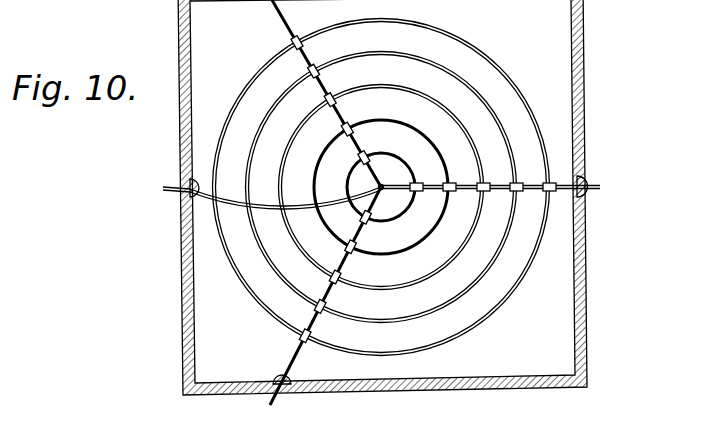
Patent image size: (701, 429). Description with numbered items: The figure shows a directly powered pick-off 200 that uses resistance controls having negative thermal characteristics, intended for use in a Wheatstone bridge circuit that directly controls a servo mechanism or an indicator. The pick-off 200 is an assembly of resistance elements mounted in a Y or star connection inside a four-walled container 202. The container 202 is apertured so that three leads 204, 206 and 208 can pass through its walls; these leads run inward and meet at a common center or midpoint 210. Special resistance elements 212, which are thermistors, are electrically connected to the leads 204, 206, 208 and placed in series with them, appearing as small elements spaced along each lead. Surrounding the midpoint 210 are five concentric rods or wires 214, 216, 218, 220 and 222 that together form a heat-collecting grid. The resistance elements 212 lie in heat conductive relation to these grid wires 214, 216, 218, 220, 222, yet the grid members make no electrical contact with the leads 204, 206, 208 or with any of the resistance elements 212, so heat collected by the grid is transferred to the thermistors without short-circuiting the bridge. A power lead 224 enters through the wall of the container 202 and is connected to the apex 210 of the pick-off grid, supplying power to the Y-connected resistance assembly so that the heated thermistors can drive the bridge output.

The pick-off 200 is at (546, 36).
The container 202 is at (585, 76).
The lead 204 is at (572, 187).
The lead 206 is at (288, 370).
The lead 208 is at (283, 24).
The center or midpoint 210 is at (384, 182).
The resistance elements 212 is at (312, 70).
The concentric rod or wire 214 is at (414, 179).
The concentric rod or wire 216 is at (444, 152).
The concentric rod or wire 218 is at (455, 116).
The concentric rod or wire 220 is at (482, 97).
The concentric rod or wire 222 is at (525, 100).
The power lead 224 is at (163, 192).